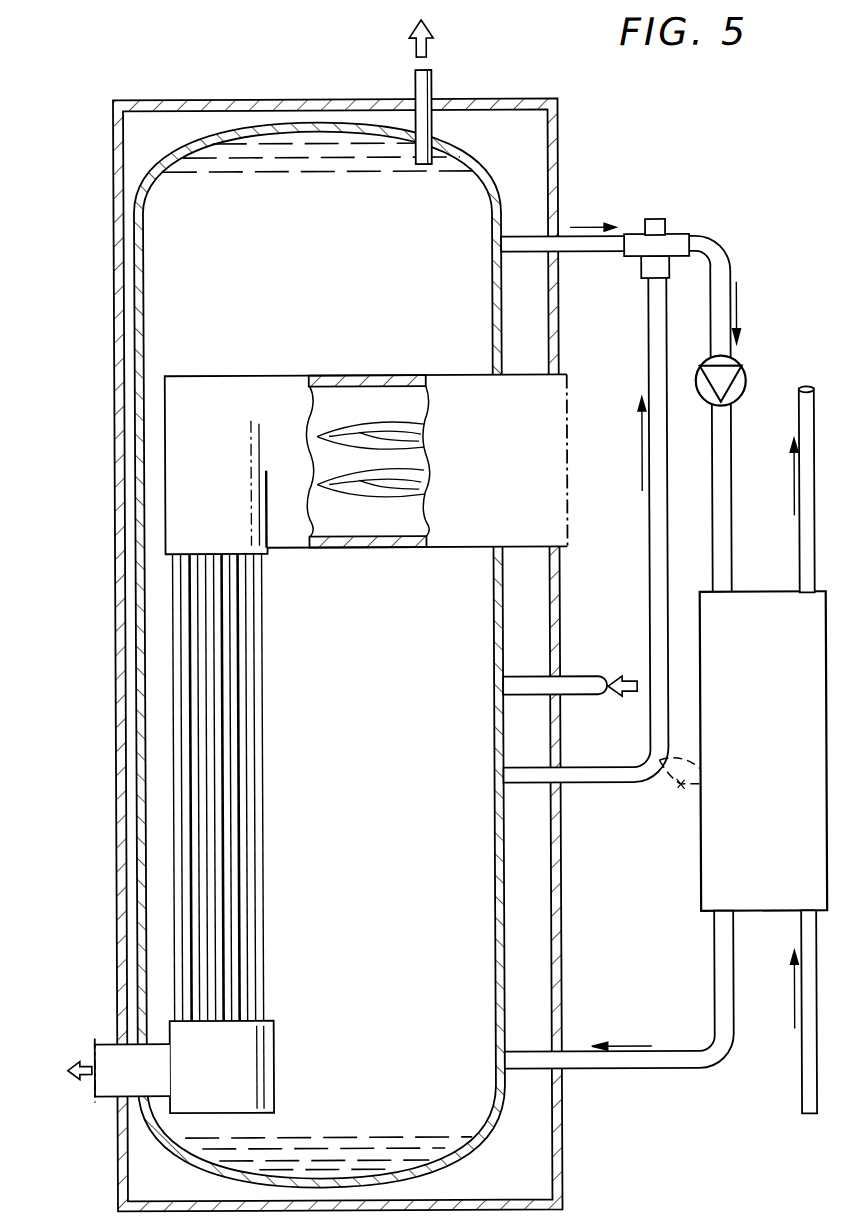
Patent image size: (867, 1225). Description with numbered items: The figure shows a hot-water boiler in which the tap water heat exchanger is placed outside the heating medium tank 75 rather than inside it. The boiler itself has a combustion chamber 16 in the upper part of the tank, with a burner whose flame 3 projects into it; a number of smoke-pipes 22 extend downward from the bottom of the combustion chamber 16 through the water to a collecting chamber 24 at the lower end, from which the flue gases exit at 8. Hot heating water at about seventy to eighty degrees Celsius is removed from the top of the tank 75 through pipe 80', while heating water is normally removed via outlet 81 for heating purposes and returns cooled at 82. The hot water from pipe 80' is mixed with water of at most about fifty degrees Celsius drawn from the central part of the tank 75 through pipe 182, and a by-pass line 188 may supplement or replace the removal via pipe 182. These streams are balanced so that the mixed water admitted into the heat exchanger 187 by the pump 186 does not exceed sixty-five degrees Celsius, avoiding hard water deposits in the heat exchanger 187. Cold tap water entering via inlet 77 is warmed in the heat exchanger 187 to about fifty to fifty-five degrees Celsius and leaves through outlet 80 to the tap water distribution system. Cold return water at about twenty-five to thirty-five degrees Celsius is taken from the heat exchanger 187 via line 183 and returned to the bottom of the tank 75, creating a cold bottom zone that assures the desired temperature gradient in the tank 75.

The burner / combustion tube 3 is at (380, 527).
The exhaust outlet 8 is at (119, 1070).
The combustion chamber 16 is at (224, 446).
The smoke-pipes 22 is at (252, 694).
The collecting chamber 24 is at (226, 1076).
The heating medium tank 75 is at (470, 1149).
The inlet 77 is at (806, 1095).
The outlet 80 is at (784, 489).
The pipe 80' is at (563, 264).
The outlet 81 is at (427, 90).
The return 82 is at (578, 680).
The pipe 182 is at (583, 777).
The line 183 is at (578, 1062).
The pump 186 is at (702, 401).
The heat exchanger 187 is at (790, 776).
The by-pass line 188 is at (676, 795).